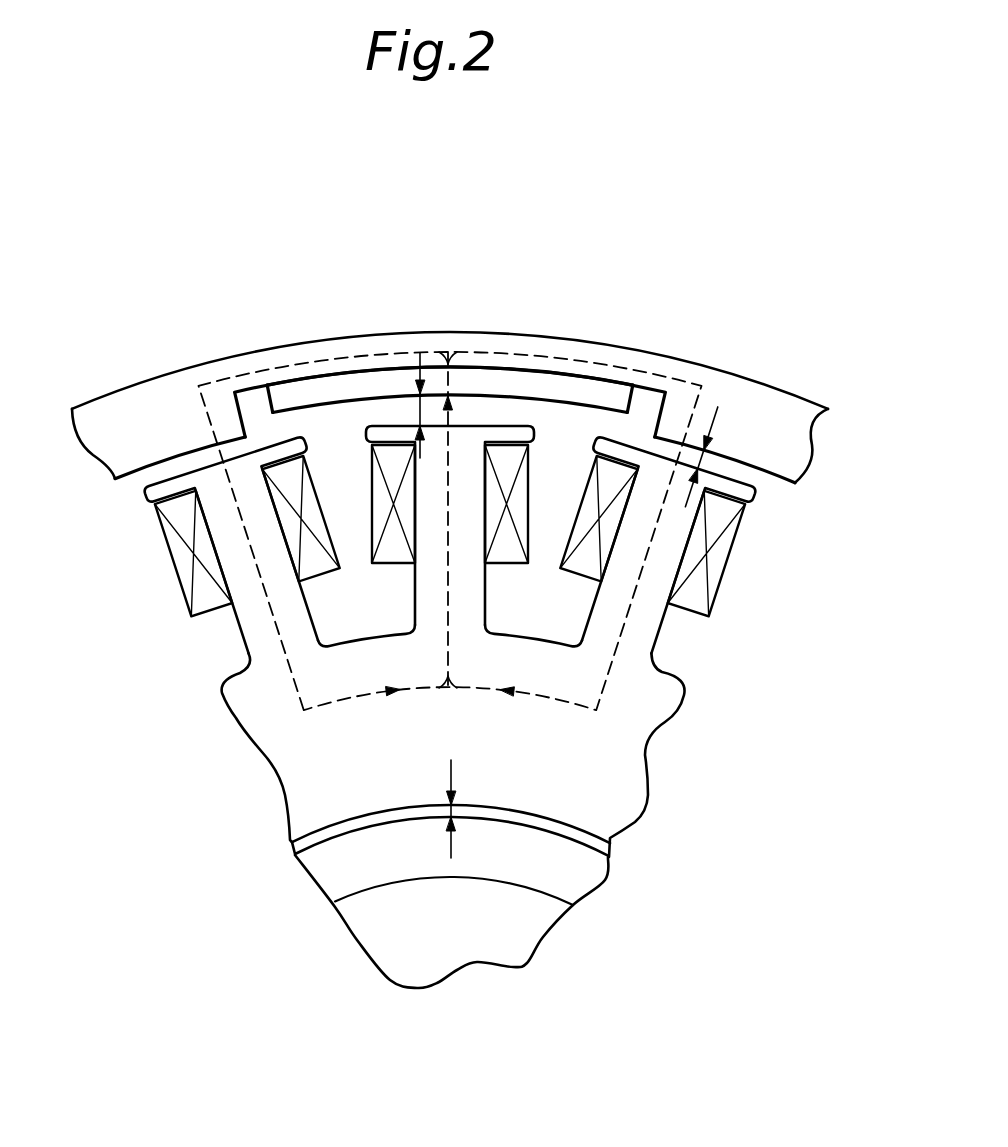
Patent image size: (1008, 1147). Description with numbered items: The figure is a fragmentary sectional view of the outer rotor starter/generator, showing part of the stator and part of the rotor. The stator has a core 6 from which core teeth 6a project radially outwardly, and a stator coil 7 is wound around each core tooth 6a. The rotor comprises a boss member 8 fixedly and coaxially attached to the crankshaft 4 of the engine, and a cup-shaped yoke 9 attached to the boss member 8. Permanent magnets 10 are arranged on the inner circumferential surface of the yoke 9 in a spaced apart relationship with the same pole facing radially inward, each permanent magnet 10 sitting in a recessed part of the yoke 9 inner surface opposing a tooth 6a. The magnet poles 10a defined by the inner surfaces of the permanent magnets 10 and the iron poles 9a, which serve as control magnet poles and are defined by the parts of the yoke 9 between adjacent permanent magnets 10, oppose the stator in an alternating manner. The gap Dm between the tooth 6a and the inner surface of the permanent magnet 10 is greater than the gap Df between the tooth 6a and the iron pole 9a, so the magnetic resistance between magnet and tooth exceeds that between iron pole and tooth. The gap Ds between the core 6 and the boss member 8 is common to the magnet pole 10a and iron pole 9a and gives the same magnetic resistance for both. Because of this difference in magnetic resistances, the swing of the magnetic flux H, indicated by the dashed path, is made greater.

The crankshaft 4 is at (540, 937).
The core 6 is at (643, 745).
The core tooth 6a is at (246, 643).
The stator coil 7 is at (176, 560).
The boss member 8 is at (600, 872).
The yoke 9 is at (297, 346).
The iron pole 9a is at (128, 477).
The permanent magnet 10 is at (505, 368).
The magnet pole 10a is at (558, 404).
The magnetic flux H is at (237, 372).
The gap between tooth and permanent magnet Dm is at (420, 410).
The gap between tooth and iron pole Df is at (712, 458).
The gap between core and boss member Ds is at (452, 805).